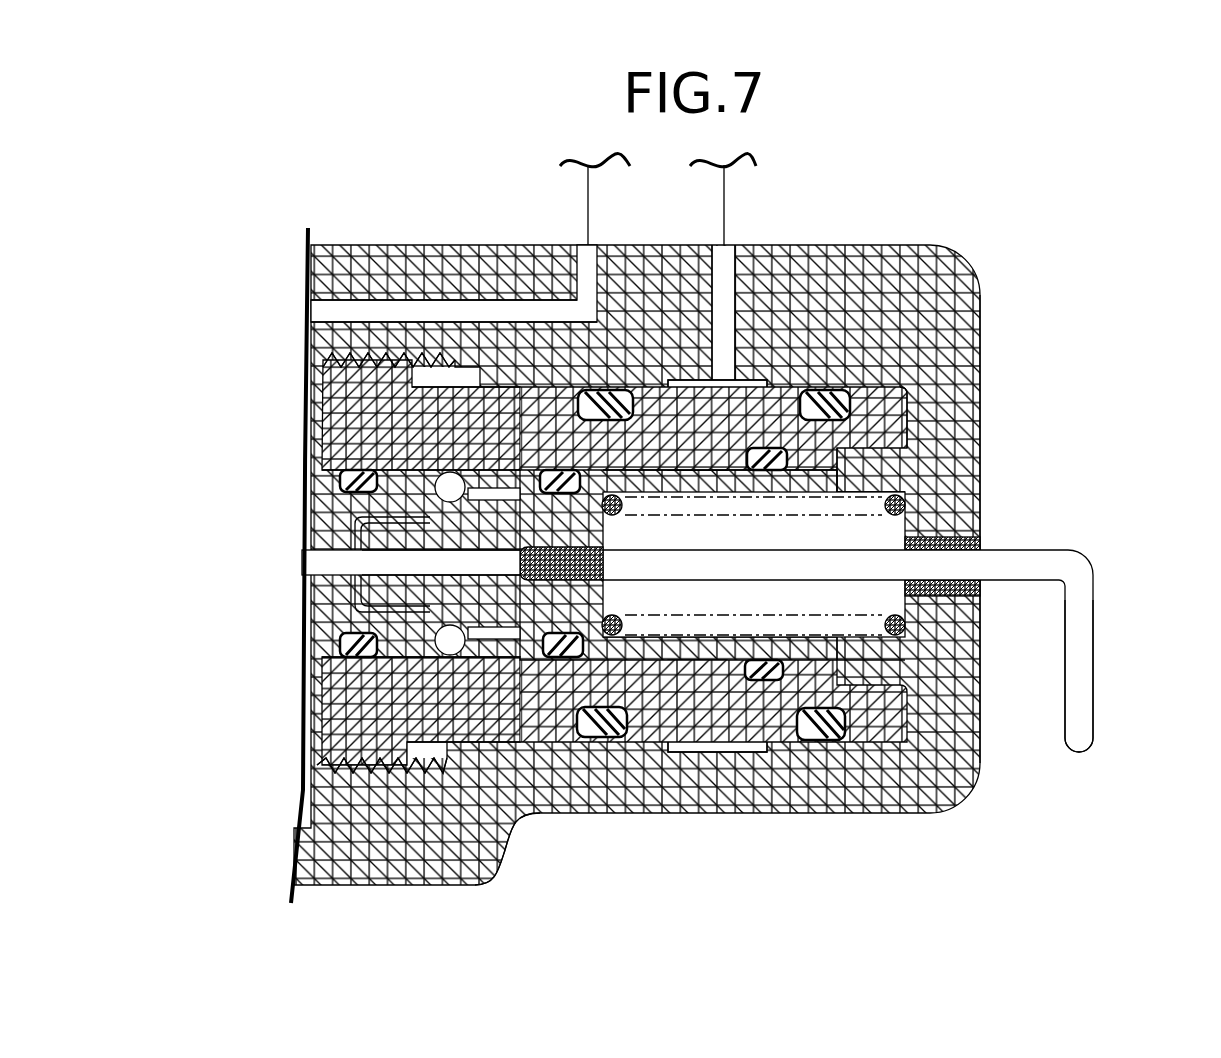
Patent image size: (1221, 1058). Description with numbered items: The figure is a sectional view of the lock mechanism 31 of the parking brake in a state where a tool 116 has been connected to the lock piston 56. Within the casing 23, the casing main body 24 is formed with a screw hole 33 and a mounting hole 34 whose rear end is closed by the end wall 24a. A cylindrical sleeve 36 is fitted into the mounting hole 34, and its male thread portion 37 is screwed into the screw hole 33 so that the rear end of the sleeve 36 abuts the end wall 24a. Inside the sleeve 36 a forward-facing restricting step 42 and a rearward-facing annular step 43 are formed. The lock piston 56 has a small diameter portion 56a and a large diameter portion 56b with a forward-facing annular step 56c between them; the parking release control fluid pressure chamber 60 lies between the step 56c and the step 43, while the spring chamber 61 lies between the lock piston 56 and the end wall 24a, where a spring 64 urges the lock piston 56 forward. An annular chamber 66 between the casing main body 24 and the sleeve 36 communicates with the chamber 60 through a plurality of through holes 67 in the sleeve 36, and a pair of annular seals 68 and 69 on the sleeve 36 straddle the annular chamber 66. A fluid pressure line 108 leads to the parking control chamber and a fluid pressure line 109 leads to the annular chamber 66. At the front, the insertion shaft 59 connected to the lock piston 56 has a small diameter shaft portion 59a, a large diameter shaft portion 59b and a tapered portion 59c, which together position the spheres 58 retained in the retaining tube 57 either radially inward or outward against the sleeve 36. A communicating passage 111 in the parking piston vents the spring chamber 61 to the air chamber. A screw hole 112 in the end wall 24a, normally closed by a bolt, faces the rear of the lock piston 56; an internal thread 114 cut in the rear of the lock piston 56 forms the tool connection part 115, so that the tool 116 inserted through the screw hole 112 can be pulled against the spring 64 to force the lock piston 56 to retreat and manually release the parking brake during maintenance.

The casing 23 is at (516, 860).
The casing main body 24 is at (683, 807).
The end wall 24a is at (962, 730).
The lock mechanism 31 is at (322, 715).
The screw hole 33 is at (327, 382).
The mounting hole 34 is at (907, 390).
The sleeve 36 is at (907, 415).
The male thread portion 37 is at (385, 352).
The restricting step 42 is at (427, 665).
The annular step 43 is at (670, 493).
The lock piston 56 is at (847, 670).
The small diameter portion 56a is at (537, 467).
The large diameter portion 56b is at (837, 467).
The annular step 56c is at (690, 672).
The retaining tube 57 is at (486, 488).
The spheres 58 is at (450, 472).
The insertion shaft 59 is at (348, 588).
The small diameter shaft portion 59a is at (340, 487).
The large diameter shaft portion 59b is at (425, 640).
The tapered portion 59c is at (440, 500).
The parking release control fluid pressure chamber 60 is at (677, 680).
The spring chamber 61 is at (768, 546).
The spring 64 is at (907, 493).
The annular chamber 66 is at (737, 398).
The through holes 67 is at (697, 388).
The annular seal 68 is at (605, 390).
The annular seal 69 is at (838, 390).
The fluid pressure line 108 is at (475, 298).
The fluid pressure line 109 is at (724, 390).
The communicating passage 111 is at (497, 560).
The screw hole 112 is at (980, 545).
The internal thread 114 is at (547, 582).
The tool connection part 115 is at (612, 582).
The tool 116 is at (1077, 697).